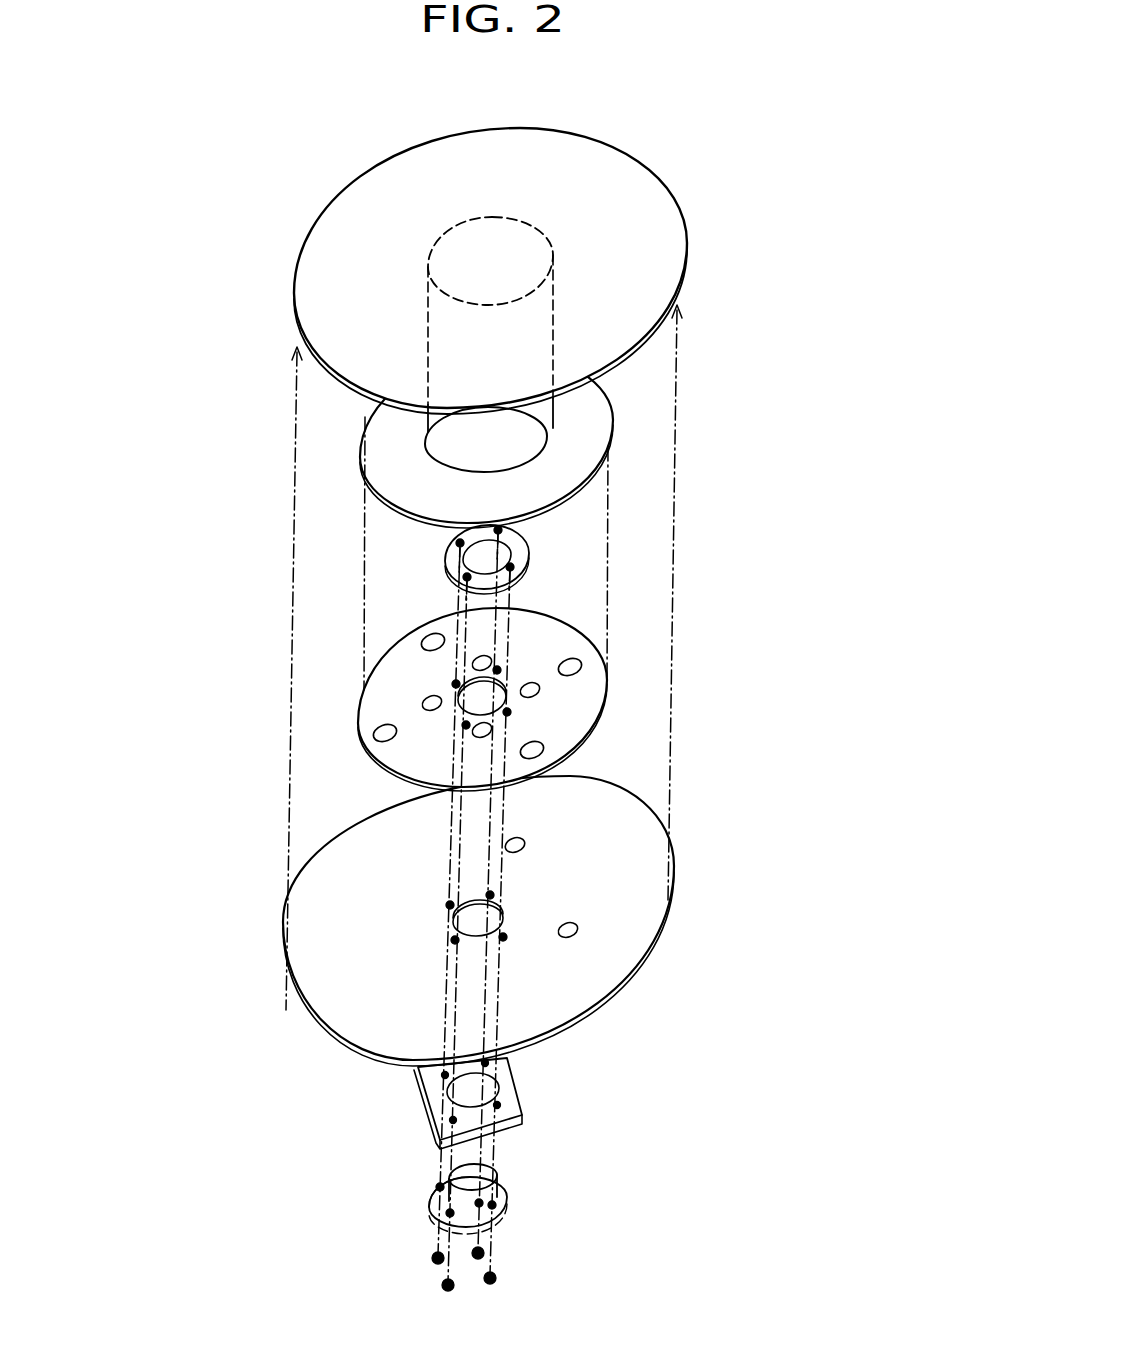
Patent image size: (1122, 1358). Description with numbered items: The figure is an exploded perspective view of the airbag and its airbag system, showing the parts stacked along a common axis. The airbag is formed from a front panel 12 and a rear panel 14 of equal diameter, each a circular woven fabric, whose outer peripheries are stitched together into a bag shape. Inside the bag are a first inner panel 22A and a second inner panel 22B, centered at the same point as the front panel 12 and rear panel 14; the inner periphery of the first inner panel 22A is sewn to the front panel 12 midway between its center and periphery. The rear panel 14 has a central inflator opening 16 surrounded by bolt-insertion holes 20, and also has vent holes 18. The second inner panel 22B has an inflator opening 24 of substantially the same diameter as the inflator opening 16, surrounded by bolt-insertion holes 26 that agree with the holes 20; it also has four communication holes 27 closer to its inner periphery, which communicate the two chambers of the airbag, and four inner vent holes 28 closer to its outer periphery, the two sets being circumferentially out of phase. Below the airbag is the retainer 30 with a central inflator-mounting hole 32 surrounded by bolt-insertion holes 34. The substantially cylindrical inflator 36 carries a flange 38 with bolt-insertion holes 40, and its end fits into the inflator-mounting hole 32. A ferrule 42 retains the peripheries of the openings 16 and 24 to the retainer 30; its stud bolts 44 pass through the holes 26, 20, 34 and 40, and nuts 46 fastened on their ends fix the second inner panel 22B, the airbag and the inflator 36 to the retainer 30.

The front panel 12 is at (632, 175).
The rear panel 14 is at (343, 1012).
The inflator opening 16 is at (460, 924).
The vent holes 18 is at (523, 845).
The bolt-insertion holes 20 is at (450, 905).
The first inner panel 22A is at (600, 408).
The second inner panel 22B is at (607, 668).
The inflator opening 24 is at (472, 702).
The bolt-insertion holes 26 is at (500, 670).
The communication holes 27 is at (485, 655).
The inner vent holes 28 is at (430, 636).
The retainer 30 is at (522, 1096).
The inflator-mounting hole 32 is at (473, 1090).
The bolt-insertion holes 34 is at (418, 1084).
The inflator 36 is at (495, 1173).
The flange 38 is at (505, 1190).
The bolt-insertion holes 40 is at (440, 1187).
The ferrule 42 is at (532, 540).
The stud bolts 44 is at (512, 567).
The nuts 46 is at (445, 1285).